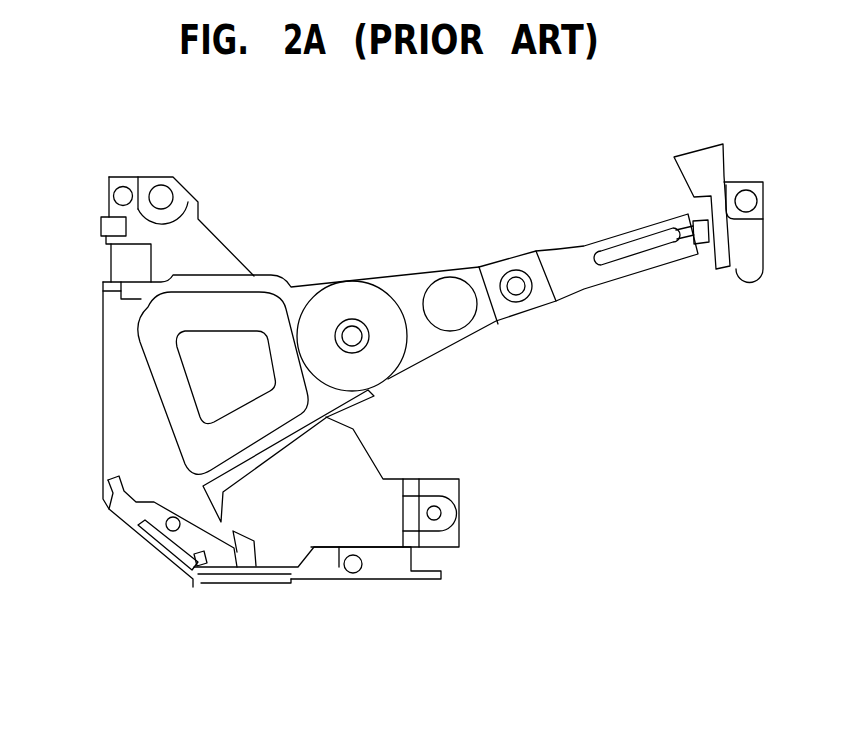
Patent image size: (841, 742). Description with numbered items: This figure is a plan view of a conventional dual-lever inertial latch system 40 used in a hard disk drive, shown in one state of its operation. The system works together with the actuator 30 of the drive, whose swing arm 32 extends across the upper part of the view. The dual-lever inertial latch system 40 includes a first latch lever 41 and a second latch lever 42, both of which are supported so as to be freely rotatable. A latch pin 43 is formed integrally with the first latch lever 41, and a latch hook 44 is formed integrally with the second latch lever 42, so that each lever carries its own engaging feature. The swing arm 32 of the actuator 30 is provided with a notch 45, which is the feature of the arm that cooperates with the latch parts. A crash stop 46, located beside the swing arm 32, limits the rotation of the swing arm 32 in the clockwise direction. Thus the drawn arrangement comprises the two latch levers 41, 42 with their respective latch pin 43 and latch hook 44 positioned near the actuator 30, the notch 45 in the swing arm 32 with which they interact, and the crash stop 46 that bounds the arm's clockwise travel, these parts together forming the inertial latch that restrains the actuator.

The actuator 30 is at (466, 249).
The swing arm 32 is at (447, 345).
The dual-lever inertial latch system 40 is at (252, 592).
The first latch lever 41 is at (395, 573).
The second latch lever 42 is at (110, 514).
The latch pin 43 is at (188, 586).
The latch hook 44 is at (238, 535).
The notch 45 is at (217, 507).
The crash stop 46 is at (115, 266).